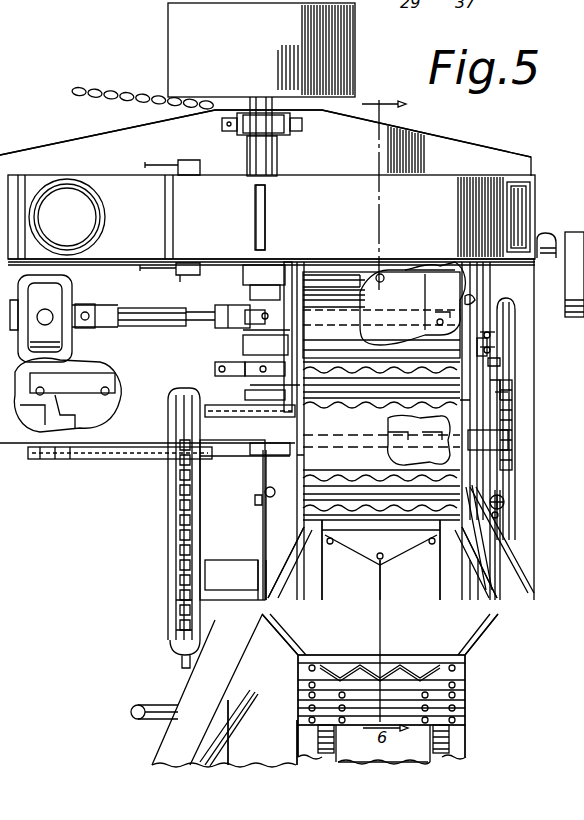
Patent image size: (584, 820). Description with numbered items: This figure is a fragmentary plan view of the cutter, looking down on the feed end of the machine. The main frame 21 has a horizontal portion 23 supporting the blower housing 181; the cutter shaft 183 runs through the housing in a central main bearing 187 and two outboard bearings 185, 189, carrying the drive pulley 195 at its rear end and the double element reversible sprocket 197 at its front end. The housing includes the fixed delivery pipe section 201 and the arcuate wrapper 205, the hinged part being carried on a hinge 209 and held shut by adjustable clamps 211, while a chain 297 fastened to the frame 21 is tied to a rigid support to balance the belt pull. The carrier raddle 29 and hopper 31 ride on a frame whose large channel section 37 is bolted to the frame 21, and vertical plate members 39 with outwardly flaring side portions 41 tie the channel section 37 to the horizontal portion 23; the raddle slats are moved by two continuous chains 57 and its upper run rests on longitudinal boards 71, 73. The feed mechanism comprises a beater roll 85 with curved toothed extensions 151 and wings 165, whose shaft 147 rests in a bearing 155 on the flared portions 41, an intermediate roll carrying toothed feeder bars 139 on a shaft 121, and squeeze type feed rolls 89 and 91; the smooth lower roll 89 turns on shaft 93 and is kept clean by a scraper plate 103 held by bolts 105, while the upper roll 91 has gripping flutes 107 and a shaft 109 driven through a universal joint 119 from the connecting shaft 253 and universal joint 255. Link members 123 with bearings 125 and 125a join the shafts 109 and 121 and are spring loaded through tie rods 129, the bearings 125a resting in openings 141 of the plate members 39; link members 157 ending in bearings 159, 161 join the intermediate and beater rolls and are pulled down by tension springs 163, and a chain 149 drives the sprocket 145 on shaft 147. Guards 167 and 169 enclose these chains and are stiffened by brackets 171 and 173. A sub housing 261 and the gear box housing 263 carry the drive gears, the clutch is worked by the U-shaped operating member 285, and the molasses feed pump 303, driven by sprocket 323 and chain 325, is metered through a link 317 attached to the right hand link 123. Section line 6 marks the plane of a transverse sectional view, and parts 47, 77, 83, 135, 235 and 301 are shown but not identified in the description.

The main frame 21 is at (500, 148).
The horizontal portion of the main frame 23 is at (412, 148).
The carrier raddle 29 is at (460, 690).
The hopper 31 is at (190, 690).
The channel section 37 is at (522, 540).
The plate members 39 is at (280, 384).
The side portions 41 is at (262, 530).
The fitting 47 is at (545, 236).
The chains 57 is at (336, 740).
The board 71 is at (382, 761).
The board 73 is at (300, 751).
The support plate 77 is at (255, 736).
The rail 83 is at (185, 751).
The beater roll 85 is at (412, 592).
The lower feed roll 89 is at (442, 290).
The upper feed roll 91 is at (345, 285).
The shaft 93 is at (302, 312).
The scraper plate 103 is at (418, 268).
The bolts 105 is at (388, 272).
The ribs or flutes 107 is at (333, 374).
The upper feed roll shaft 109 is at (440, 320).
The universal joint 119 is at (226, 310).
The supporting shaft for the intermediate roll 121 is at (400, 450).
The link members 123 is at (290, 349).
The bearing members 125 is at (275, 295).
The bearings 125a is at (272, 472).
The tie rod 129 is at (288, 331).
The chain 135 is at (520, 412).
The toothed feeder bars 139 is at (356, 376).
The openings 141 is at (462, 400).
The sprocket 145 is at (180, 614).
The beater roll shaft 147 is at (359, 580).
The chain 149 is at (180, 552).
The toothed extensions 151 is at (385, 540).
The bearing 155 is at (204, 640).
The link members 157 is at (260, 516).
The bearing 159 is at (520, 436).
The bearing 161 is at (262, 612).
The tension springs 163 is at (255, 500).
The wings 165 is at (262, 575).
The guard 167 is at (515, 350).
The guard 169 is at (172, 496).
The bracket 171 is at (500, 360).
The bracket 173 is at (205, 458).
The blower housing 181 is at (330, 204).
The shaft 183 is at (278, 152).
The bearing 185 is at (300, 126).
The main bearing 187 is at (255, 275).
The bearing 189 is at (215, 370).
The drive pulley 195 is at (190, 45).
The reversible sprocket 197 is at (290, 412).
The delivery pipe section 201 is at (72, 178).
The arcuate wrapper 205 is at (340, 185).
The hinge 209 is at (528, 200).
The adjustable clamps 211 is at (192, 160).
The rail 235 is at (210, 420).
The connecting shaft 253 is at (150, 298).
The universal joint 255 is at (100, 298).
The sub housing 261 is at (60, 349).
The gear box housing 263 is at (90, 390).
The operating member 285 is at (152, 722).
The chain 297 is at (130, 97).
The bracket 301 is at (70, 425).
The molasses feed pump 303 is at (45, 420).
The link 317 is at (478, 346).
The sprocket 323 is at (38, 460).
The chain 325 is at (84, 460).
The section line 6 is at (384, 187).